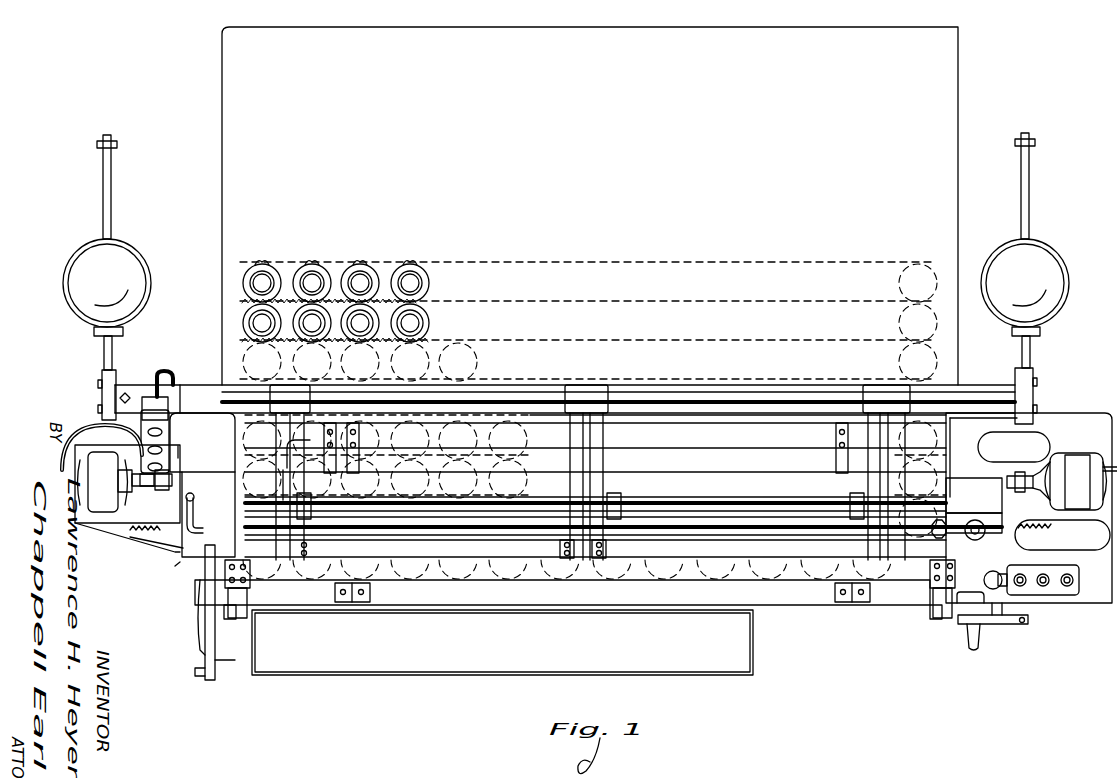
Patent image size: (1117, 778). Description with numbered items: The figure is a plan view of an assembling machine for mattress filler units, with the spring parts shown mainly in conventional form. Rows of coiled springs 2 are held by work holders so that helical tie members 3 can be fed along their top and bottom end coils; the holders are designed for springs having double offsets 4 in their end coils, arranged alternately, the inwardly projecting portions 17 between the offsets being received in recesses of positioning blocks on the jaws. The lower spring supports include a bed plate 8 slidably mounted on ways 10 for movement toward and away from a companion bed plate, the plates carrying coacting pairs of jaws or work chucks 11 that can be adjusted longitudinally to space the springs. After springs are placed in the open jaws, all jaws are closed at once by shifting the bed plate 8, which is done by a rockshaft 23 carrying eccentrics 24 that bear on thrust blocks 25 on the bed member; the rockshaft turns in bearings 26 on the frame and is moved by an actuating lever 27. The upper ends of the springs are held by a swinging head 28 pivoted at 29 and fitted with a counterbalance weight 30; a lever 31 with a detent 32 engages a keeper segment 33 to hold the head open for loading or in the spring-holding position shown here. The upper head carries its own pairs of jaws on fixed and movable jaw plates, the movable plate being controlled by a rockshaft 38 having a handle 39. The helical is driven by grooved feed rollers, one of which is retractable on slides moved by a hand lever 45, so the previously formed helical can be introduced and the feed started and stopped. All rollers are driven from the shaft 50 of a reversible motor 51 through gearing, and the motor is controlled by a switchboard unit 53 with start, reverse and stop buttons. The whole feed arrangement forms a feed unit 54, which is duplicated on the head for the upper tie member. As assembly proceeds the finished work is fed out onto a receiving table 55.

The coiled springs 2 is at (430, 282).
The helical tie members 3 is at (386, 300).
The double offsets 4 is at (262, 262).
The bed plate 8 is at (405, 582).
The ways 10 is at (360, 607).
The jaws or work chucks 11 is at (179, 566).
The inwardly projecting portions 17 is at (313, 262).
The rockshaft 23 is at (310, 612).
The eccentrics 24 is at (620, 500).
The thrust blocks 25 is at (232, 620).
The bearings 26 is at (258, 612).
The actuating lever 27 is at (969, 595).
The swinging head 28 is at (598, 438).
The pivot 29 is at (600, 386).
The counterbalance weight 30 is at (132, 258).
The lever 31 is at (206, 610).
The detent 32 is at (200, 636).
The keeper segment 33 is at (204, 668).
The rockshaft 38 is at (537, 505).
The handle 39 is at (282, 470).
The hand lever 45 is at (985, 533).
The shaft 50 is at (1033, 478).
The reversible motor 51 is at (108, 515).
The switchboard unit 53 is at (172, 430).
The feed unit 54 is at (998, 516).
The receiving table 55 is at (240, 194).